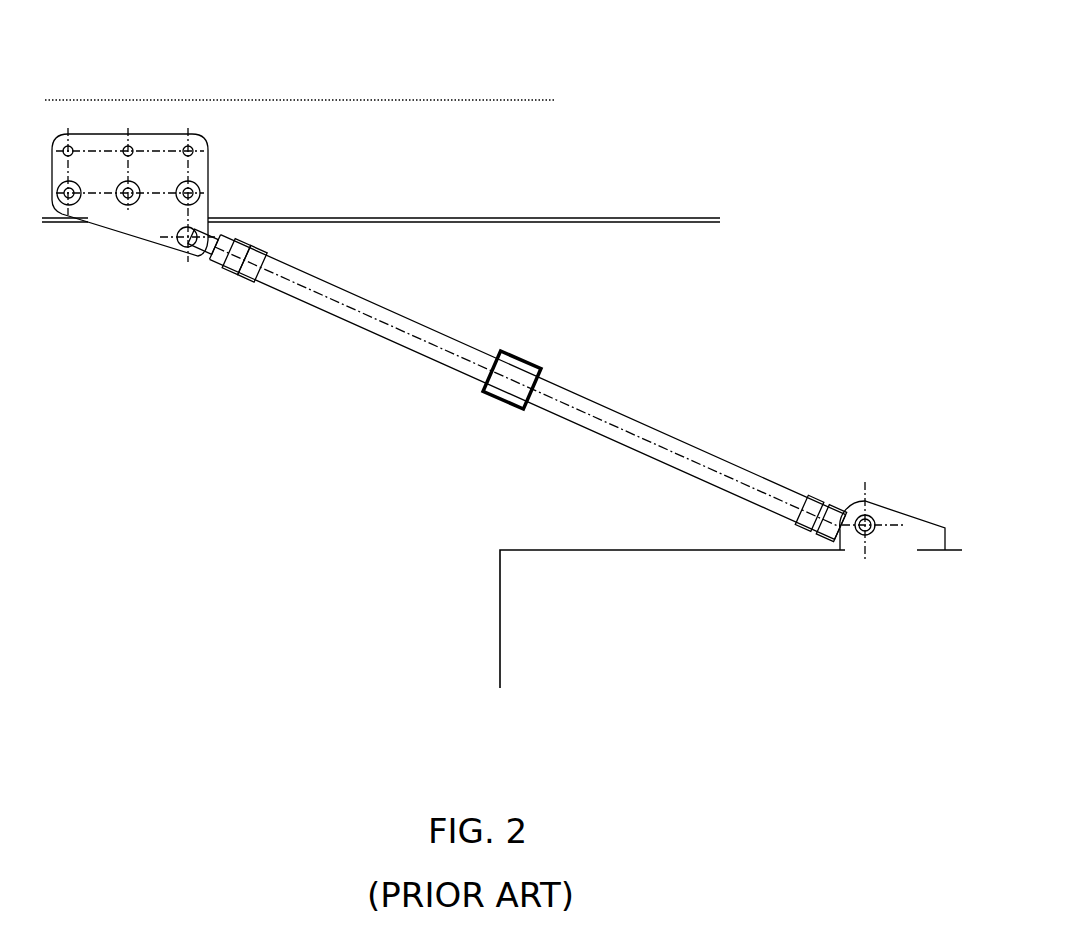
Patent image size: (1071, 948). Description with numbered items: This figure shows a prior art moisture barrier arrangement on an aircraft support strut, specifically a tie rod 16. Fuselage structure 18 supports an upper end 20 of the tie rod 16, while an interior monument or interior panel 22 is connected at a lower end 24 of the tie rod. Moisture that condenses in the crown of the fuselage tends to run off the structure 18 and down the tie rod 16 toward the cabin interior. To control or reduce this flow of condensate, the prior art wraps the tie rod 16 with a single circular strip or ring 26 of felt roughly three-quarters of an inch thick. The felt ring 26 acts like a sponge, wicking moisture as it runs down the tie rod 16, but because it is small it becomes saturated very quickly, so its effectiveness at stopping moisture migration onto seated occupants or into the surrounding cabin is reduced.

The tie rod 16 is at (383, 310).
The fuselage structure 18 is at (355, 150).
The upper end 20 is at (228, 265).
The interior monument or interior panel 22 is at (633, 550).
The lower end 24 is at (830, 508).
The ring of felt 26 is at (523, 360).